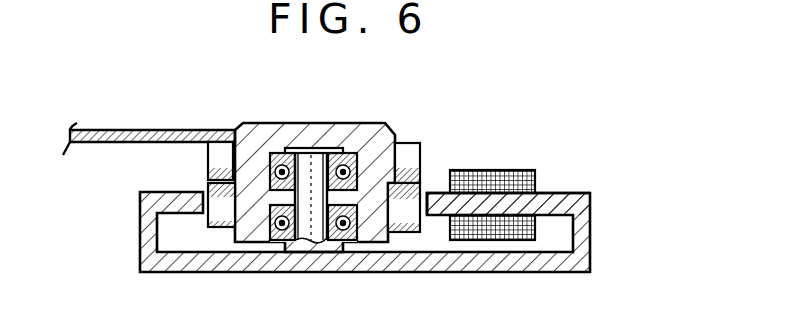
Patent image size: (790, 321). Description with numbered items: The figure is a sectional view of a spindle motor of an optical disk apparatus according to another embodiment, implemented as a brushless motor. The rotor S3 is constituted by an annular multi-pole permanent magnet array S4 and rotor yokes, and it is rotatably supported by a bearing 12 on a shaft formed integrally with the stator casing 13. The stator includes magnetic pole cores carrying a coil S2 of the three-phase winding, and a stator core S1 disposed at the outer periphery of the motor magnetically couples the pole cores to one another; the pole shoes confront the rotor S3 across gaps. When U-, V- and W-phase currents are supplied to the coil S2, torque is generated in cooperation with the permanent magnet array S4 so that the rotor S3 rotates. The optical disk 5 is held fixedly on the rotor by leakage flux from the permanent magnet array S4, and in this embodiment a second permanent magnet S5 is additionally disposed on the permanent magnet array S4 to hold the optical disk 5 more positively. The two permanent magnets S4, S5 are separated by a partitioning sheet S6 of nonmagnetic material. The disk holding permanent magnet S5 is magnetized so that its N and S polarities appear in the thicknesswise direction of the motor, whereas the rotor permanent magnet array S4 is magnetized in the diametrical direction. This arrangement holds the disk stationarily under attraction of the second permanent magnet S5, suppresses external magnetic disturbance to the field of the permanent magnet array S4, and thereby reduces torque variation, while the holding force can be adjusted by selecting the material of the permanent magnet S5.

The optical disk 5 is at (127, 130).
The bearing 12 is at (283, 243).
The stator casing 13 is at (590, 250).
The stator core S1 is at (560, 198).
The coil S2 is at (513, 170).
The rotor S3 is at (273, 124).
The permanent magnet array S4 is at (220, 228).
The second permanent magnet S5 is at (416, 143).
The partitioning sheet S6 is at (208, 170).